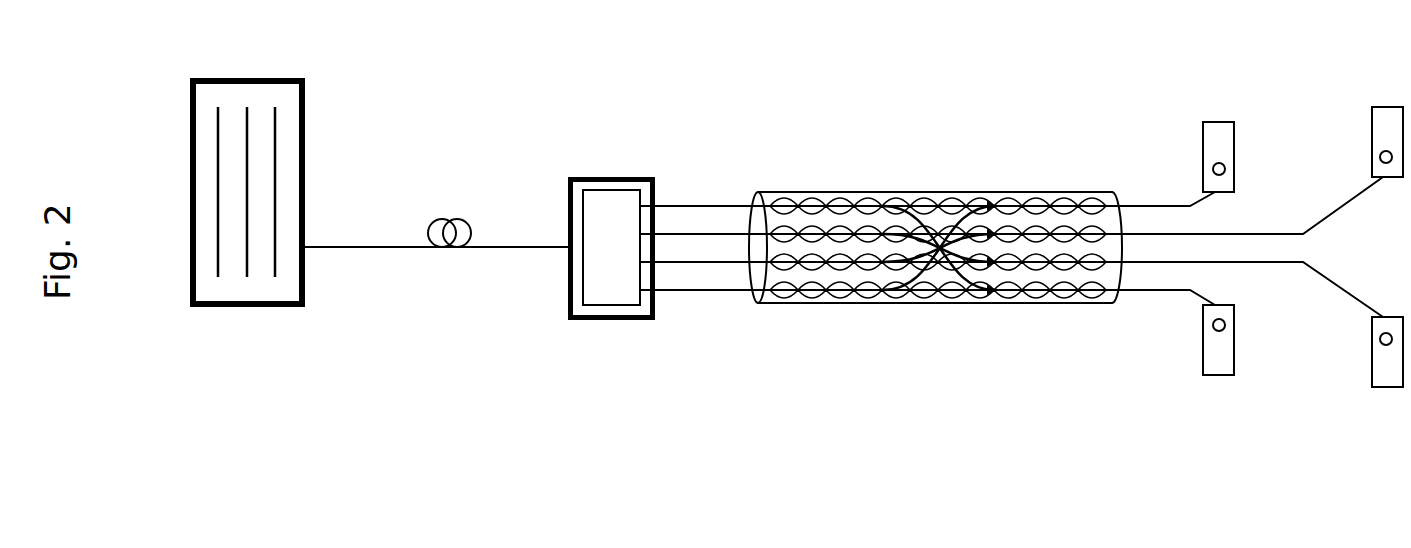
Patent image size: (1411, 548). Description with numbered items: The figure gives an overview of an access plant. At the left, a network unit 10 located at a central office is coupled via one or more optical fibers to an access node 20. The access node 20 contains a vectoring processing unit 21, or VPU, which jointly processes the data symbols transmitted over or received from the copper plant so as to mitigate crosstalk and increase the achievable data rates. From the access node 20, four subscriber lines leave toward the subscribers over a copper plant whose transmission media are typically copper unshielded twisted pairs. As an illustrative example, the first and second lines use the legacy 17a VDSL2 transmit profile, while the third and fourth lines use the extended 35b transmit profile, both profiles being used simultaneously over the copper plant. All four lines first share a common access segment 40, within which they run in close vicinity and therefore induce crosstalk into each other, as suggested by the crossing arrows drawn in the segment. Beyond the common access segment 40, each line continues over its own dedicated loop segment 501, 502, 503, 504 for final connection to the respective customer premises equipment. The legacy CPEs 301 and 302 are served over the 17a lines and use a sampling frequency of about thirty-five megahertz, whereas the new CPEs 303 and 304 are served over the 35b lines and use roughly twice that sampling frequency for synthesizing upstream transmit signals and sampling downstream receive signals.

The network unit 10 is at (190, 79).
The access node 20 is at (568, 178).
The vectoring processing unit 21 is at (610, 305).
The 17a VDSL2 transmit profile 17a is at (881, 208).
The 35b VDSL2 transmit profile 35b is at (881, 292).
The common access segment 40 is at (936, 304).
The dedicated loop segment 501 is at (1158, 205).
The dedicated loop segment 502 is at (1272, 233).
The dedicated loop segment 503 is at (1270, 263).
The dedicated loop segment 504 is at (1158, 291).
The legacy customer premises equipment 301 is at (1215, 121).
The legacy customer premises equipment 302 is at (1383, 106).
The new customer premises equipment 303 is at (1383, 388).
The new customer premises equipment 304 is at (1215, 376).